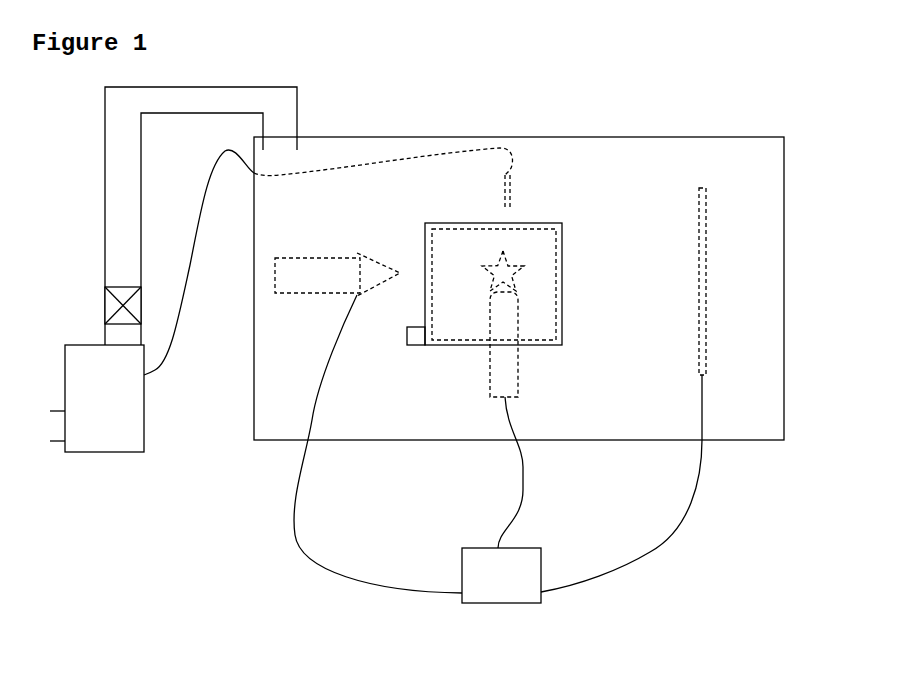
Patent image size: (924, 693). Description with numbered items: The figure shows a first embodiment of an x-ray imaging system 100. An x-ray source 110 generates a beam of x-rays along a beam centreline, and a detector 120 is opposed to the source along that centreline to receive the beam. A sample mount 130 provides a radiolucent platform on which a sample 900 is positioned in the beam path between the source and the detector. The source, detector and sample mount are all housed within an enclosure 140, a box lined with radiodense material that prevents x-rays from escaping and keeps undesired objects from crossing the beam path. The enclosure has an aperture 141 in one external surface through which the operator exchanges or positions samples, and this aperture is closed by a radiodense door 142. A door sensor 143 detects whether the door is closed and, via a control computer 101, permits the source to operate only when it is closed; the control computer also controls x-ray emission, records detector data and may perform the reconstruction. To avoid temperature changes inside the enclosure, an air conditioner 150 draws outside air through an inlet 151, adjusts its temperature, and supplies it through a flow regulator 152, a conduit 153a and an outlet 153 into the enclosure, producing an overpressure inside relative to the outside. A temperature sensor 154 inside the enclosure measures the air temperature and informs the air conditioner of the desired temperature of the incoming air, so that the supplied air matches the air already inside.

The x-ray imaging system 100 is at (543, 325).
The control computer 101 is at (462, 565).
The x-ray source 110 is at (345, 263).
The detector 120 is at (702, 188).
The sample mount 130 is at (517, 362).
The enclosure 140 is at (762, 442).
The aperture 141 is at (452, 347).
The door 142 is at (460, 347).
The door sensor 143 is at (405, 347).
The air conditioner 150 is at (103, 452).
The inlet 151 is at (60, 441).
The flow regulator 152 is at (105, 290).
The outlet 153 is at (227, 194).
The conduit 153a is at (209, 86).
The temperature sensor 154 is at (508, 188).
The sample 900 is at (523, 288).